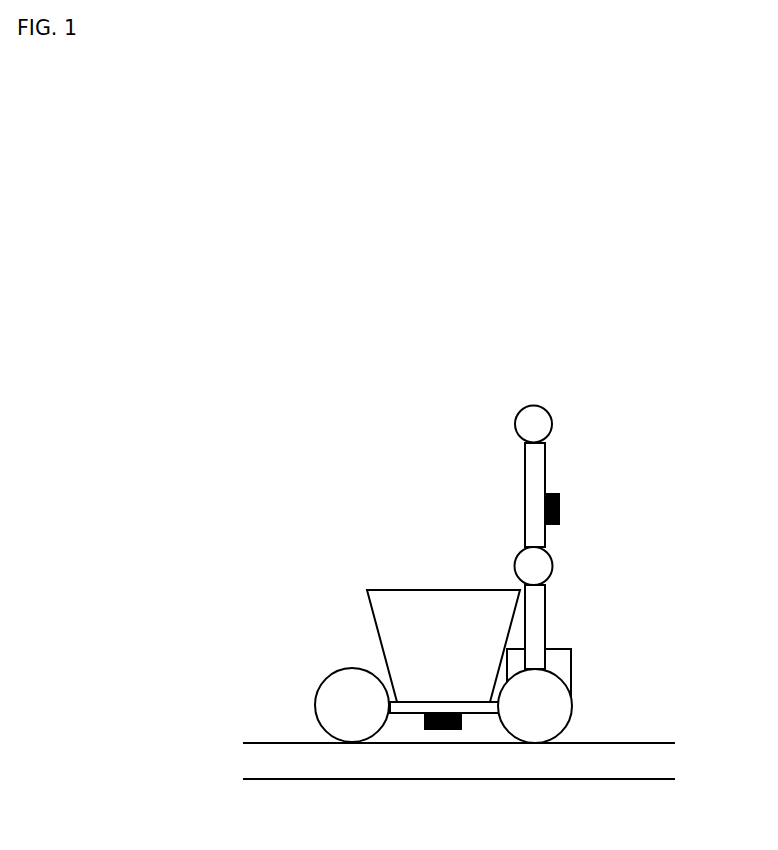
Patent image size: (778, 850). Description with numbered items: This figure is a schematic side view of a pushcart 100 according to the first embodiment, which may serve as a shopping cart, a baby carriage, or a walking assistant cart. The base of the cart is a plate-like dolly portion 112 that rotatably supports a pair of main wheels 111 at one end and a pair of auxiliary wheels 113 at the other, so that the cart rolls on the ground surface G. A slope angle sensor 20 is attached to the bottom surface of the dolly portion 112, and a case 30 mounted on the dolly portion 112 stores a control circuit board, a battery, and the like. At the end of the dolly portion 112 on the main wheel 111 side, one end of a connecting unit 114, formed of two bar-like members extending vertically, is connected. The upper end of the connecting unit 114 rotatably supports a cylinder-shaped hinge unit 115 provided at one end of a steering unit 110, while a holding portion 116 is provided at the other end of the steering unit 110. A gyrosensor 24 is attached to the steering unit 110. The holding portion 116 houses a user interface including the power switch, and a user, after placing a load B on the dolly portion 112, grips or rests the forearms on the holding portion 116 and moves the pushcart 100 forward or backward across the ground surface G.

The pushcart 100 is at (359, 471).
The steering unit 110 is at (535, 467).
The main wheel 111 is at (536, 723).
The dolly portion 112 is at (410, 708).
The auxiliary wheel 113 is at (352, 722).
The connecting unit 114 is at (535, 612).
The hinge unit 115 is at (543, 567).
The holding portion 116 is at (543, 425).
The slope angle sensor 20 is at (446, 730).
The gyrosensor 24 is at (560, 508).
The case 30 is at (571, 665).
The load B is at (440, 605).
The ground surface G is at (612, 768).